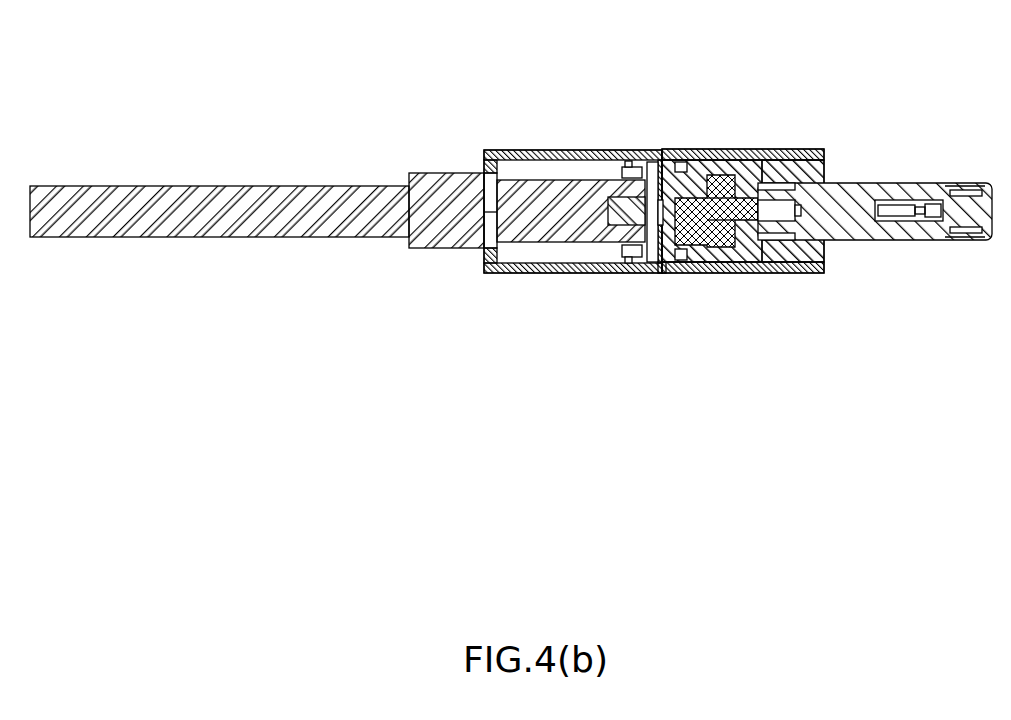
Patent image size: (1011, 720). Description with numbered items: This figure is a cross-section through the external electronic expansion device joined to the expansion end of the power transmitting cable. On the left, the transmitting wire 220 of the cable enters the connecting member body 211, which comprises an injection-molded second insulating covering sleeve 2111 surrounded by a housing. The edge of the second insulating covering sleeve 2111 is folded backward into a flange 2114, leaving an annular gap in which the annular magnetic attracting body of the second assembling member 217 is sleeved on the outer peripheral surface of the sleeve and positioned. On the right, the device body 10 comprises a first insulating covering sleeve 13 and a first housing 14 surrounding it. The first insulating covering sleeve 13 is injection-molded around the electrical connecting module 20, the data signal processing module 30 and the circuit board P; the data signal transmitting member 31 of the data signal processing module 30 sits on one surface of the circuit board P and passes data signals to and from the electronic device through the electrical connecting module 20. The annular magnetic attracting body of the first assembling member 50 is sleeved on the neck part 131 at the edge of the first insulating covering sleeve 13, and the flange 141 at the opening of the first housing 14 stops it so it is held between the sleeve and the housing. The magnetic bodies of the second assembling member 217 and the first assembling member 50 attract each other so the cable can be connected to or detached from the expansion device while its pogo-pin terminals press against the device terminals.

The transmitting wire 220 is at (191, 222).
The connecting member body 211 is at (564, 203).
The second insulating covering sleeve 2111 is at (543, 180).
The second assembling member 217 is at (628, 167).
The flange 2114 is at (620, 257).
The device body 10 is at (723, 195).
The first insulating covering sleeve 13 is at (741, 160).
The first housing 14 is at (806, 160).
The neck part 131 is at (660, 262).
The flange 141 is at (660, 265).
The first assembling member 50 is at (680, 162).
The data signal processing module 30 is at (715, 171).
The data signal transmitting member 31 is at (716, 160).
The circuit board P is at (728, 262).
The electrical connecting module 20 is at (900, 183).